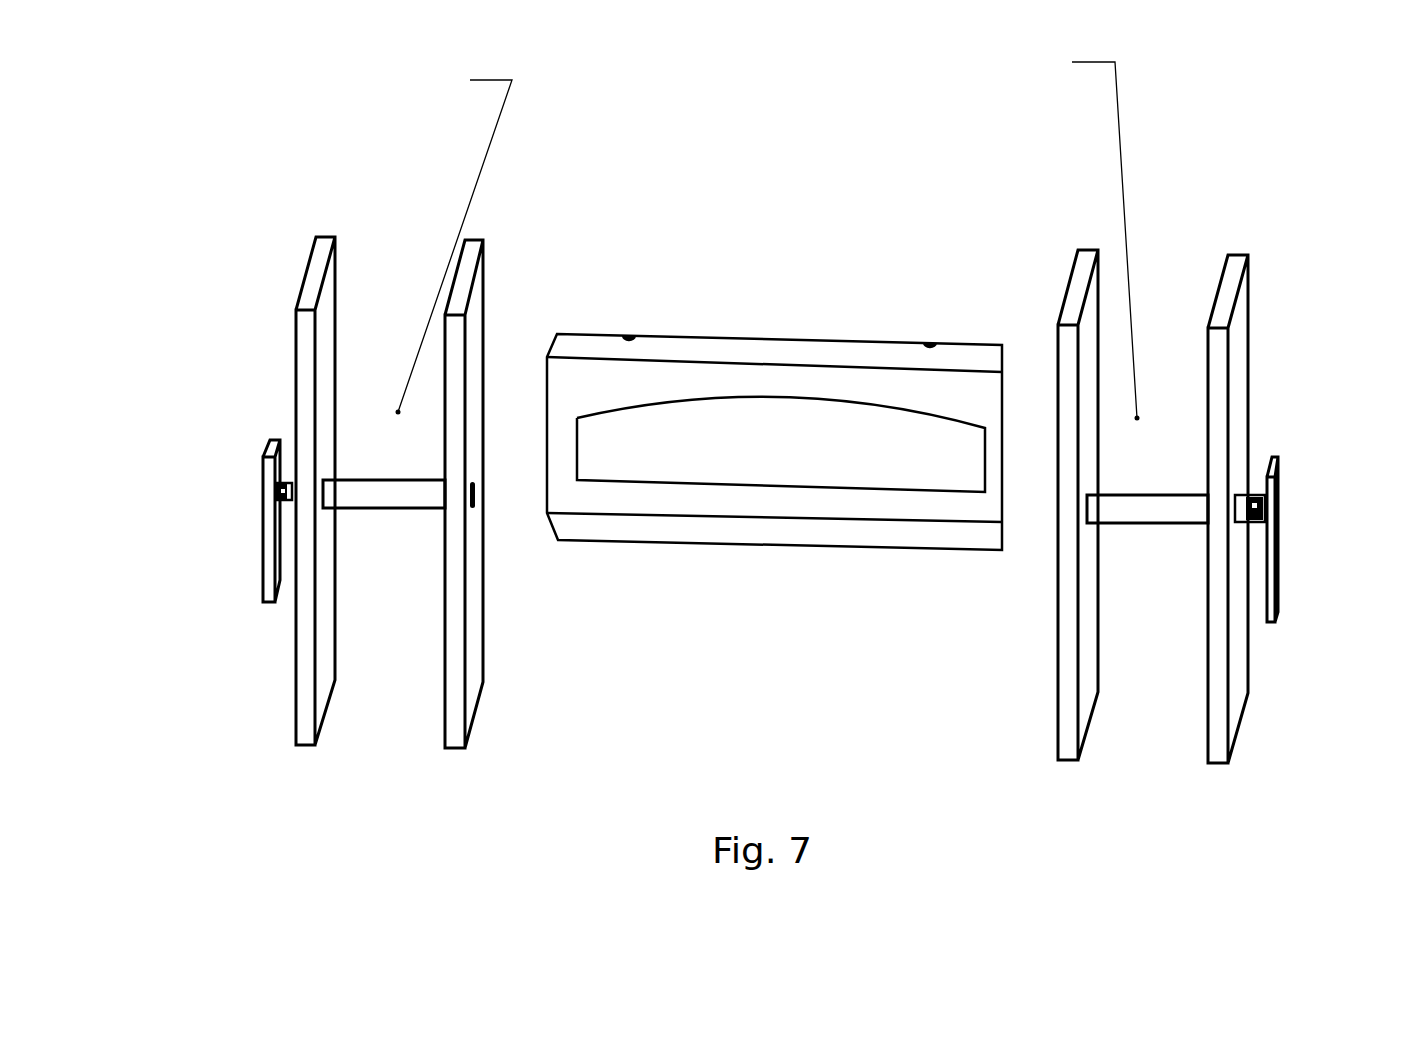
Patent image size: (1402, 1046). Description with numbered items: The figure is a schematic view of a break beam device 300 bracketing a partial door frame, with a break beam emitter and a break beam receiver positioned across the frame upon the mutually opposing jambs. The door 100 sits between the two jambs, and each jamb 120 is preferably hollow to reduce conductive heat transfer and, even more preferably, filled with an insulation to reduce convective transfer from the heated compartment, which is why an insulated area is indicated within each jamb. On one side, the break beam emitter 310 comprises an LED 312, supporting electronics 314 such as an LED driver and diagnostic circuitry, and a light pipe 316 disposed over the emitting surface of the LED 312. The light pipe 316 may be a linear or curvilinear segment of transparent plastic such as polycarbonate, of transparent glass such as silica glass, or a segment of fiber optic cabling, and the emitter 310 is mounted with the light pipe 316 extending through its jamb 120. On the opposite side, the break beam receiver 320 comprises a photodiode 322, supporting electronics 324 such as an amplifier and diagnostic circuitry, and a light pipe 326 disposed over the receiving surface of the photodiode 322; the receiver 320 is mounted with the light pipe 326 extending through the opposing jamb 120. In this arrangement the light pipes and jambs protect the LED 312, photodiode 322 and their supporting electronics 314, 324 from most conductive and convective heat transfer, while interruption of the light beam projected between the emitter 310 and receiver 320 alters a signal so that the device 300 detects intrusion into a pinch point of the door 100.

The break beam device 300 is at (196, 132).
The door 100 is at (750, 454).
The jamb 120 is at (462, 759).
The break beam emitter 310 is at (233, 435).
The LED 312 is at (282, 483).
The supporting electronics 314 is at (268, 560).
The light pipe 316 is at (365, 488).
The break beam receiver 320 is at (1306, 489).
The photodiode 322 is at (1258, 508).
The supporting electronics 324 is at (1267, 568).
The light pipe 326 is at (1158, 505).